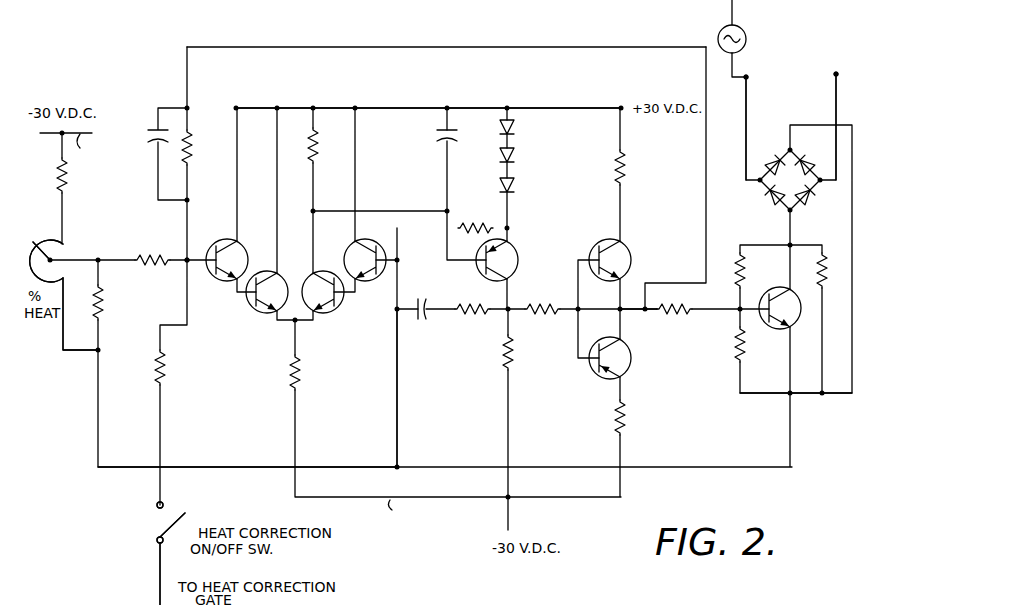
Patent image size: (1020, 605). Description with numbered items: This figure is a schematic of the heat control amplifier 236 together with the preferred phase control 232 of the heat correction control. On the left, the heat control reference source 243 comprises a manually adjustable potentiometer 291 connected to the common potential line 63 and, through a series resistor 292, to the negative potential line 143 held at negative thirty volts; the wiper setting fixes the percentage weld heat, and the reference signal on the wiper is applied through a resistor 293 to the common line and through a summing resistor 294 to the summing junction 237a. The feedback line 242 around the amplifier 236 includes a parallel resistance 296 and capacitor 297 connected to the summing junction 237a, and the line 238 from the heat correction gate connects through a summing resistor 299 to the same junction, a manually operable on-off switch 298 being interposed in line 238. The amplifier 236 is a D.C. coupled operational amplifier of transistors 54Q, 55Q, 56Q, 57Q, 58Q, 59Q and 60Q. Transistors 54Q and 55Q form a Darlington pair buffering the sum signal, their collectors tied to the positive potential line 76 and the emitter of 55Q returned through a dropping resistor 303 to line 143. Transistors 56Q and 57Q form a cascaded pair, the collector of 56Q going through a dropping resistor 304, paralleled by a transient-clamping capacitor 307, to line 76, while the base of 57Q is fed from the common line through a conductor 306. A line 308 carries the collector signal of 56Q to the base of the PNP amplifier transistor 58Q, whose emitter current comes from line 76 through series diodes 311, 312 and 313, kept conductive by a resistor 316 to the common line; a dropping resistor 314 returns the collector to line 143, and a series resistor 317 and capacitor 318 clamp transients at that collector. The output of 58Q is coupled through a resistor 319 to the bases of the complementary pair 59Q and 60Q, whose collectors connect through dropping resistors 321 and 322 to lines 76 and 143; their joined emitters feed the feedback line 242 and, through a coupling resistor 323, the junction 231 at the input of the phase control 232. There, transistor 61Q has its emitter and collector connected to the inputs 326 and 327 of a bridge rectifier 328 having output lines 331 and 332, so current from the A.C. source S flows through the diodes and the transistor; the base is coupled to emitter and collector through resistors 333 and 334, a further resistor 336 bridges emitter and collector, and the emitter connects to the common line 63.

The heat control amplifier 236 is at (247, 92).
The feedback line 242 is at (187, 70).
The capacitor 297 is at (156, 122).
The resistance 296 is at (207, 150).
The negative potential line 143 is at (255, 328).
The series resistor 292 is at (68, 174).
The manually adjustable potentiometer 291 is at (55, 240).
The summing resistor 294 is at (158, 254).
The summing junction 237a is at (184, 266).
The resistor 293 is at (104, 312).
The summing resistor 299 is at (163, 380).
The heat control reference source 243 is at (66, 363).
The common potential line 63 is at (131, 478).
The manually operable on-off switch 298 is at (178, 528).
The line 238 is at (160, 568).
The transistor 54Q is at (216, 245).
The transistor 55Q is at (262, 316).
The transistor 56Q is at (342, 318).
The transistor 57Q is at (380, 282).
The amplifier transistor 58Q is at (515, 248).
The transistor 59Q is at (628, 264).
The transistor 60Q is at (630, 372).
The transistor 61Q is at (774, 330).
The dropping resistor 304 is at (318, 158).
The positive potential line 76 is at (408, 108).
The capacitor 307 is at (440, 138).
The line 308 is at (424, 211).
The resistor 316 is at (498, 226).
The diode 311 is at (517, 128).
The diode 312 is at (517, 157).
The diode 313 is at (517, 187).
The dropping resistor 321 is at (626, 168).
The capacitor 318 is at (440, 284).
The series resistor 317 is at (490, 306).
The resistor 319 is at (560, 306).
The conductor 306 is at (400, 370).
The dropping resistor 314 is at (516, 362).
The dropping resistor 303 is at (299, 378).
The output junction 231 is at (651, 312).
The coupling resistor 323 is at (680, 318).
The dropping resistor 322 is at (627, 428).
The resistor 333 is at (736, 366).
The resistor 334 is at (744, 266).
The resistor 336 is at (830, 300).
The phase control 232 is at (768, 400).
The bridge rectifier input 327 is at (788, 150).
The bridge rectifier 328 is at (765, 202).
The bridge rectifier input 326 is at (792, 213).
The output line 331 is at (748, 98).
The output line 332 is at (840, 98).
The A.C. source S is at (745, 26).